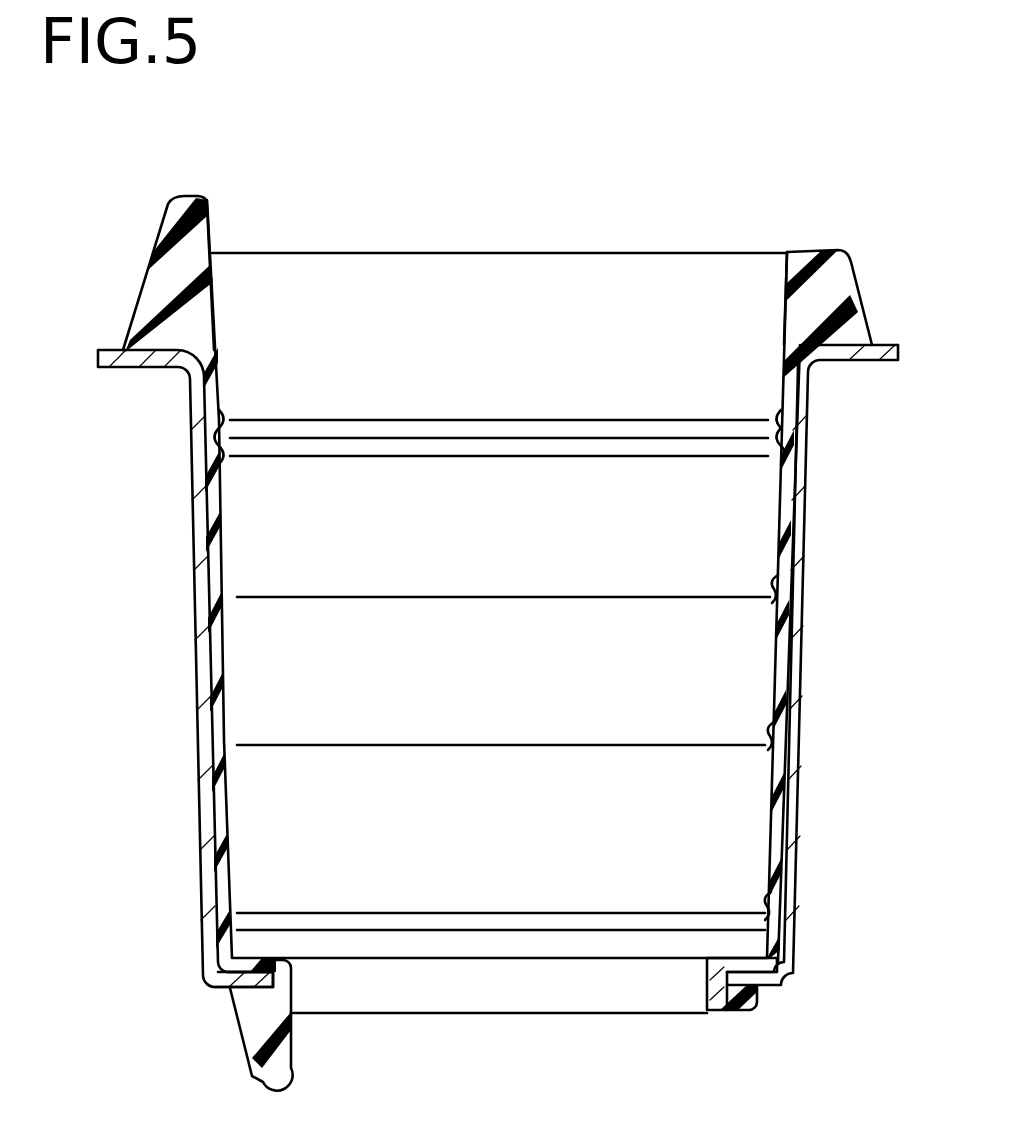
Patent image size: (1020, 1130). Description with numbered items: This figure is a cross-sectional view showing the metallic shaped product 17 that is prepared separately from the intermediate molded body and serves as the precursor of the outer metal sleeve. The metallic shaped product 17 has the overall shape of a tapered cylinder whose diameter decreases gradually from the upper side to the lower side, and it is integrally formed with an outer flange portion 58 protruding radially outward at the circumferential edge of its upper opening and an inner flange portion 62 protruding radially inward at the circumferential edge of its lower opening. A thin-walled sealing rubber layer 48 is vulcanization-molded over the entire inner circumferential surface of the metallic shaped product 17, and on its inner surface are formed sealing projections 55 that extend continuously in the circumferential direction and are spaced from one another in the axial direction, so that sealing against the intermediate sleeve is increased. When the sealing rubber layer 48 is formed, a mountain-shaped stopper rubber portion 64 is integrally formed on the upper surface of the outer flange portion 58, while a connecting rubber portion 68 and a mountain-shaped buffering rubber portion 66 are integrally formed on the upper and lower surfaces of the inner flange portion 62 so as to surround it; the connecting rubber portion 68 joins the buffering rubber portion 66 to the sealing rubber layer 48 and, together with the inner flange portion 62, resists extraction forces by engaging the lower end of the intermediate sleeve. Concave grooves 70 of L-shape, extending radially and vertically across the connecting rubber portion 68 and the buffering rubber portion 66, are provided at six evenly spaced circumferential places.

The metallic shaped product 17 is at (180, 518).
The sealing rubber layer 48 is at (232, 718).
The sealing projections 55 is at (770, 418).
The outer flange portion 58 is at (120, 352).
The inner flange portion 62 is at (262, 980).
The stopper rubber portion 64 is at (835, 282).
The buffering rubber portion 66 is at (747, 1003).
The connecting rubber portion 68 is at (240, 965).
The concave grooves 70 is at (727, 968).